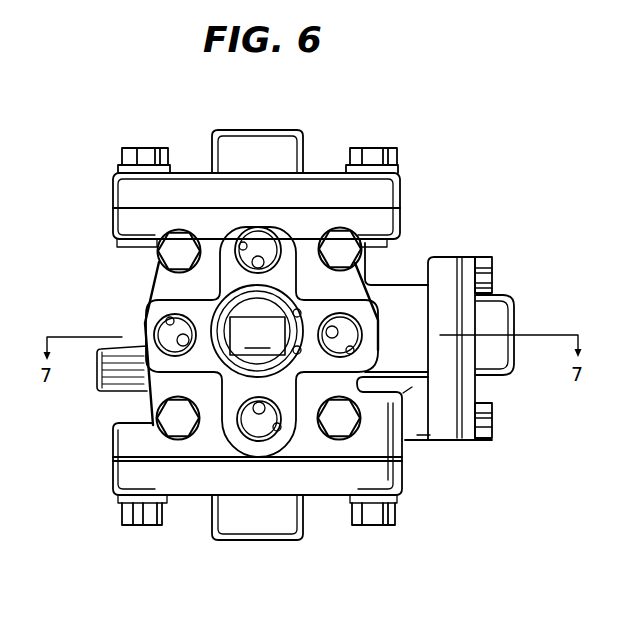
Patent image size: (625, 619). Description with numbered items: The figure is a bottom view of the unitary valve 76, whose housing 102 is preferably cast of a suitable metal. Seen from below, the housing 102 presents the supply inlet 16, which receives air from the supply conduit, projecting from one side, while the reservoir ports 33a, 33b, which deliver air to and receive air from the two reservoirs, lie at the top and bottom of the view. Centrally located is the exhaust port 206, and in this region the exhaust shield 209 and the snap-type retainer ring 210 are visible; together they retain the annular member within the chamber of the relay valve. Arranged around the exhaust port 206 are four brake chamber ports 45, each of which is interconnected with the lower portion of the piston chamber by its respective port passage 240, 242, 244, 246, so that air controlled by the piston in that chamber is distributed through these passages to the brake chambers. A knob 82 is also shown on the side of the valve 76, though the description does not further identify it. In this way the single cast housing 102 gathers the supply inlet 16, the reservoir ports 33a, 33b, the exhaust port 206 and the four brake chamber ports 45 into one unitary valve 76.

The supply inlet 16 is at (514, 312).
The reservoir port 33a is at (255, 130).
The reservoir port 33b is at (260, 540).
The brake chamber ports 45 is at (240, 235).
The valve 76 is at (430, 188).
The adjusting knob 82 is at (110, 392).
The housing 102 is at (403, 221).
The exhaust port 206 is at (298, 297).
The exhaust shield 209 is at (257, 336).
The snap-type retainer ring 210 is at (246, 363).
The port passage 240 is at (250, 267).
The port passage 242 is at (336, 331).
The port passage 244 is at (266, 408).
The port passage 246 is at (182, 337).